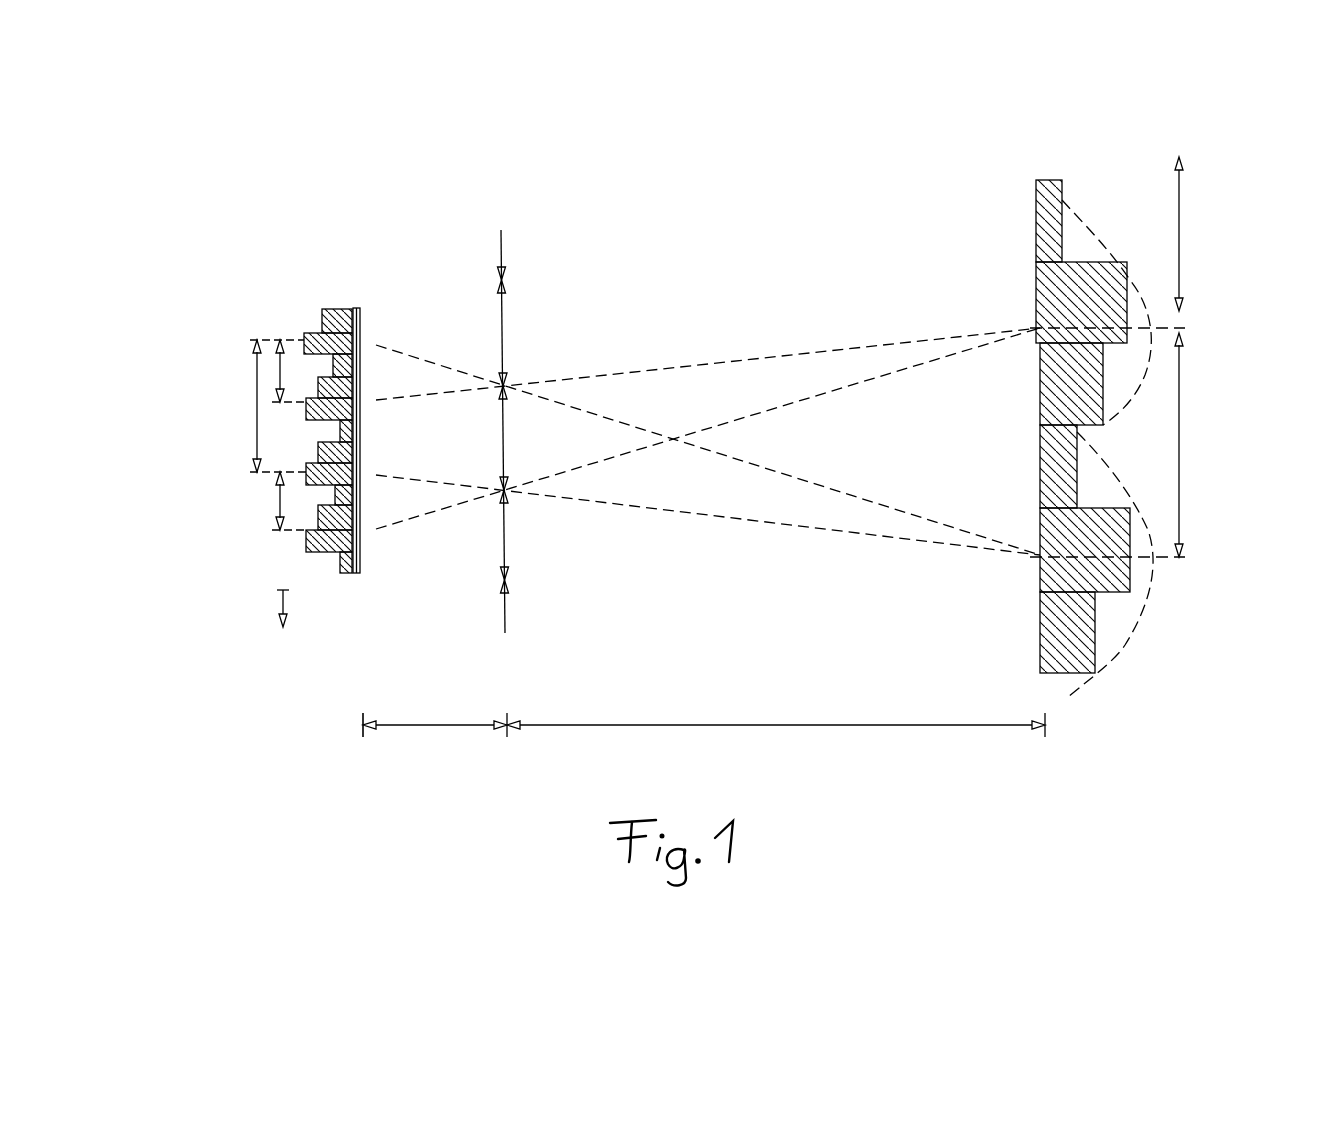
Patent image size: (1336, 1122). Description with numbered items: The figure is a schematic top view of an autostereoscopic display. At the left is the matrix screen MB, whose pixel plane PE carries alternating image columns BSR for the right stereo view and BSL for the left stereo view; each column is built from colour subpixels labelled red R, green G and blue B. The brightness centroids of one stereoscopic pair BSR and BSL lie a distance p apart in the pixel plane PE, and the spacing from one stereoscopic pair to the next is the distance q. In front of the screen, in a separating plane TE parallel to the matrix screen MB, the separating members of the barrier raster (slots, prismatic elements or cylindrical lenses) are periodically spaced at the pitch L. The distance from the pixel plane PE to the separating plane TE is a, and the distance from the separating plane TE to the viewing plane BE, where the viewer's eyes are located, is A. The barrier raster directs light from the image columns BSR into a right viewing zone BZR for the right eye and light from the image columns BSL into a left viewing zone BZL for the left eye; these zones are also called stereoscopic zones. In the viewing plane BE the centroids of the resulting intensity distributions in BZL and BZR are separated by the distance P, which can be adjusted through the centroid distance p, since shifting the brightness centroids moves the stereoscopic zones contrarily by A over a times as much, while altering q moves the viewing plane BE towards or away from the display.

The matrix screen MB is at (362, 582).
The image column from the left view BSL is at (261, 411).
The image column from the right view BSR is at (241, 379).
The blue B is at (345, 386).
The green G is at (338, 409).
The red R is at (352, 429).
The distance of the centroids between the image columns of a single view q is at (273, 406).
The centroid distance between the image columns for the left and right views p is at (286, 435).
The distance of the slits or cylindrical lenses from each other L is at (499, 431).
The right viewing zone BZR is at (1202, 200).
The left viewing zone BZL is at (1207, 452).
The distance of the stereo channels in the viewer plane P is at (1174, 357).
The distance between the matrix screen and barrier raster a is at (435, 717).
The viewing distance A is at (776, 717).
The pixel plane PE is at (362, 739).
The separating plane TE is at (506, 737).
The viewing plane BE is at (1043, 737).